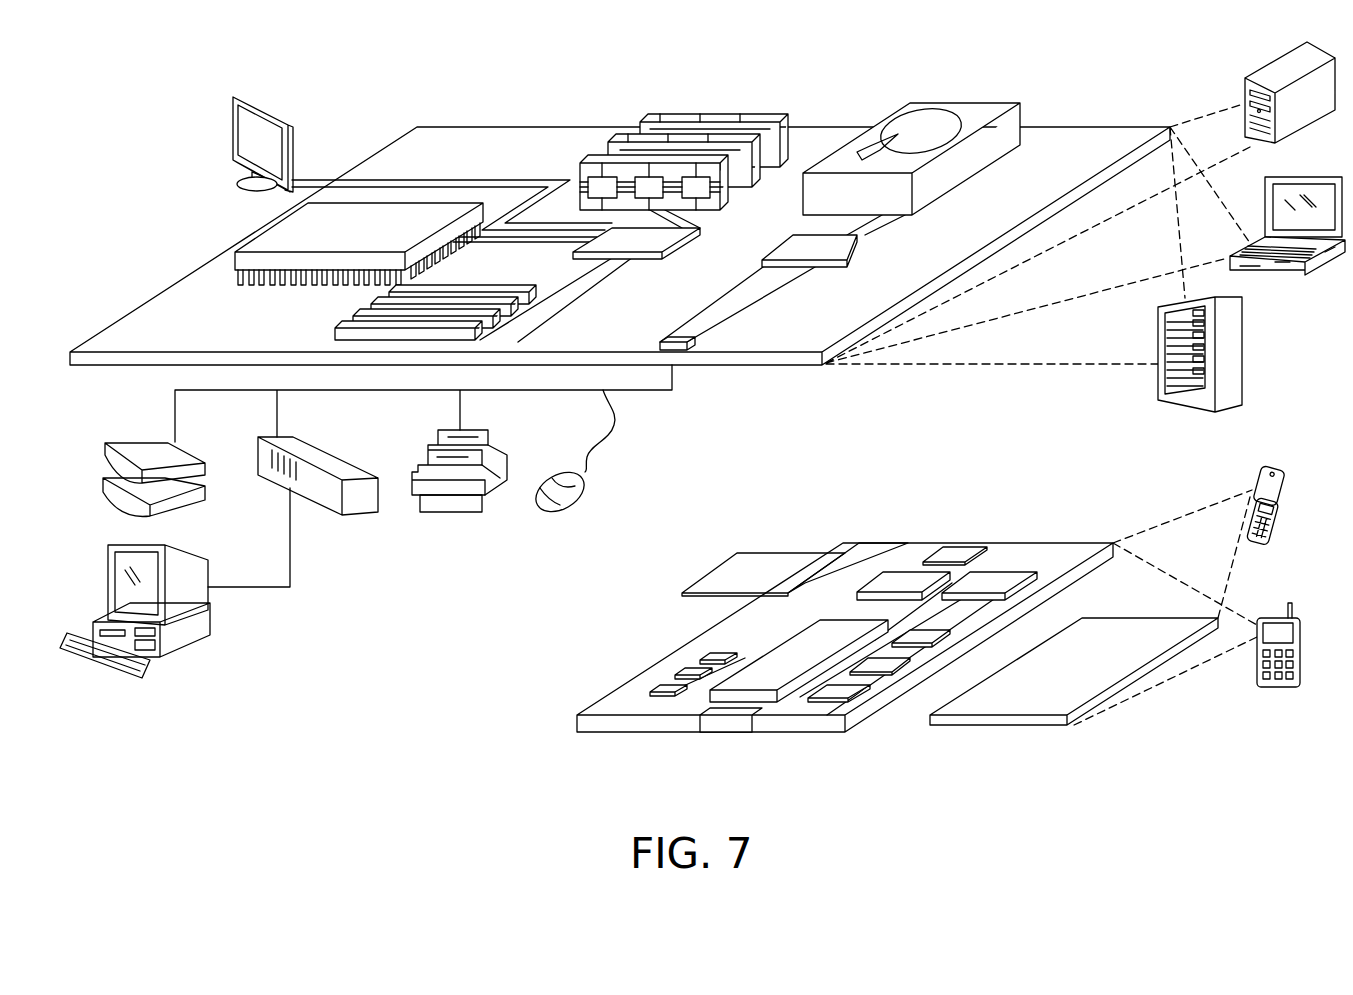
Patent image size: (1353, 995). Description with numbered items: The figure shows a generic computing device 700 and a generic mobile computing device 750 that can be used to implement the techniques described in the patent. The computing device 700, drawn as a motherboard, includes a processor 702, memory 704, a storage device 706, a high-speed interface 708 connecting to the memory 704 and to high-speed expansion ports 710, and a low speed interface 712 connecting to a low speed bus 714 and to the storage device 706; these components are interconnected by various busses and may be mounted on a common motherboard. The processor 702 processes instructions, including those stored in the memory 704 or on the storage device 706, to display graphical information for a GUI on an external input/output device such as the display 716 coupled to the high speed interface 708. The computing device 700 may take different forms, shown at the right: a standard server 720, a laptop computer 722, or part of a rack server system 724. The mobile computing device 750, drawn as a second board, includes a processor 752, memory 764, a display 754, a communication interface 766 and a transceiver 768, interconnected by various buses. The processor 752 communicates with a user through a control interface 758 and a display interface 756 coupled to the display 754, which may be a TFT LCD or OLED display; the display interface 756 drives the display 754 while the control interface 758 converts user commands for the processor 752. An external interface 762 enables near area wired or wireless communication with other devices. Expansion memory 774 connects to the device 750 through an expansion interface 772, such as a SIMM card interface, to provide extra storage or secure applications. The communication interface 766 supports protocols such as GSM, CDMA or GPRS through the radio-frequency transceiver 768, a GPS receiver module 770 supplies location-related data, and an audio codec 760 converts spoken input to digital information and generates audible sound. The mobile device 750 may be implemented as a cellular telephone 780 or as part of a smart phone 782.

The computing device 700 is at (366, 72).
The processor 702 is at (262, 232).
The memory 704 is at (718, 122).
The storage device 706 is at (955, 104).
The high-speed interface 708 is at (650, 236).
The high-speed expansion ports 710 is at (360, 314).
The low speed interface 712 is at (795, 244).
The low speed bus 714 is at (680, 338).
The display 716 is at (240, 97).
The standard server 720 is at (1266, 74).
The laptop computer 722 is at (1320, 175).
The rack server system 724 is at (1246, 357).
The mobile computing device 750 is at (530, 748).
The processor 752 is at (765, 662).
The display 754 is at (1113, 632).
The display interface 756 is at (848, 690).
The control interface 758 is at (885, 663).
The audio codec 760 is at (925, 632).
The external interface 762 is at (730, 716).
The memory 764 is at (680, 670).
The communication interface 766 is at (900, 573).
The transceiver 768 is at (995, 573).
The GPS receiver module 770 is at (955, 551).
The expansion interface 772 is at (822, 555).
The expansion memory 774 is at (740, 555).
The cellular telephone 780 is at (1264, 470).
The smart phone 782 is at (1273, 617).